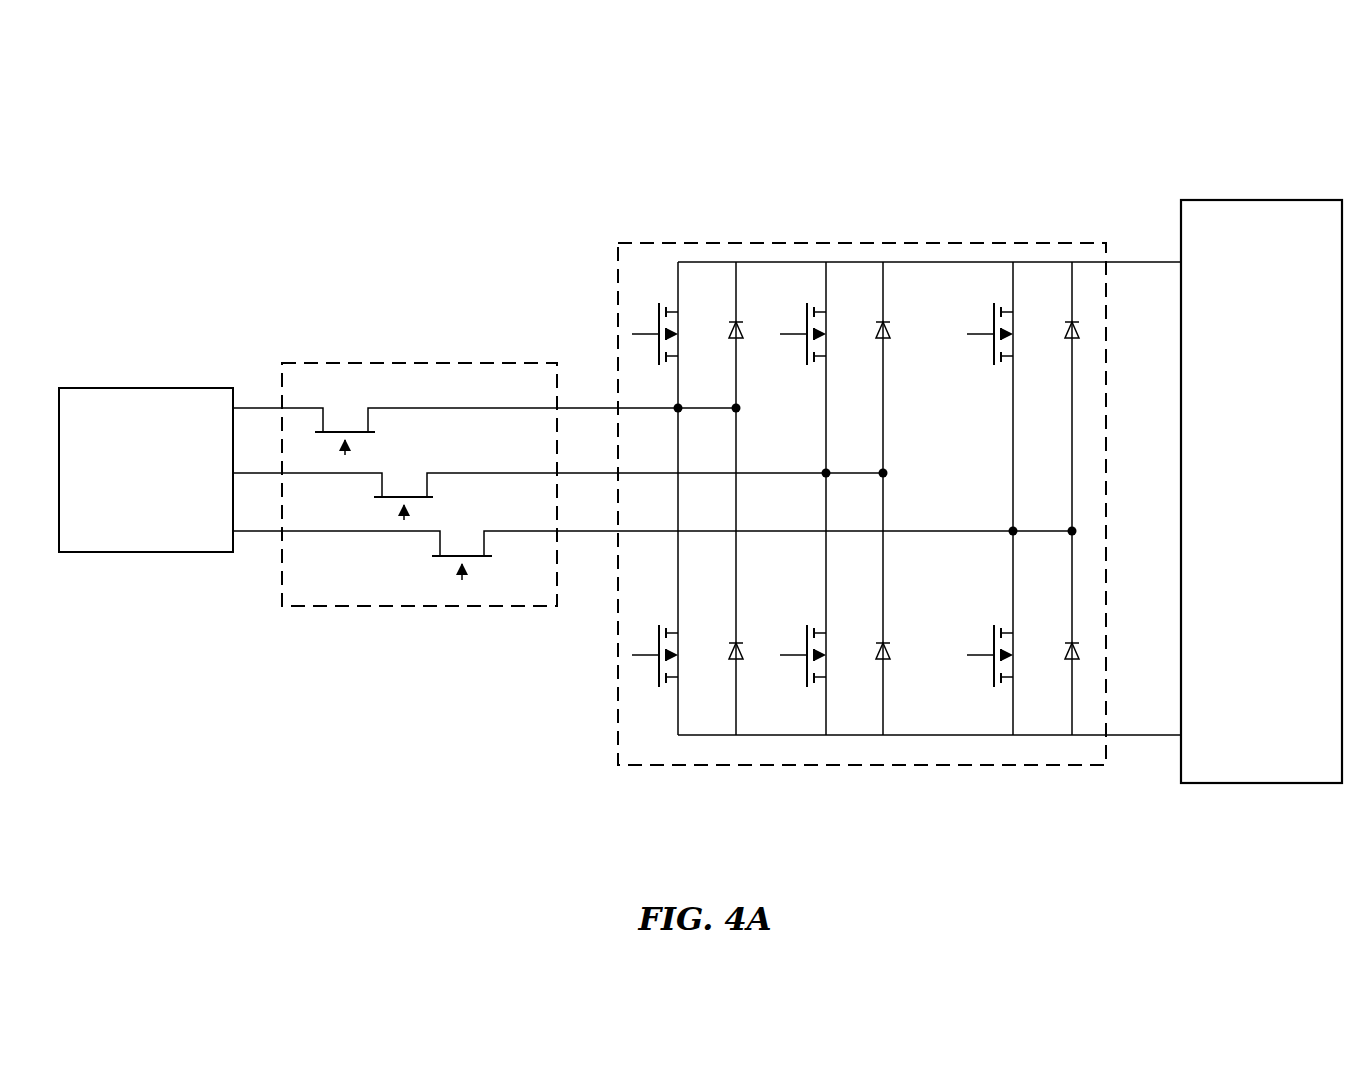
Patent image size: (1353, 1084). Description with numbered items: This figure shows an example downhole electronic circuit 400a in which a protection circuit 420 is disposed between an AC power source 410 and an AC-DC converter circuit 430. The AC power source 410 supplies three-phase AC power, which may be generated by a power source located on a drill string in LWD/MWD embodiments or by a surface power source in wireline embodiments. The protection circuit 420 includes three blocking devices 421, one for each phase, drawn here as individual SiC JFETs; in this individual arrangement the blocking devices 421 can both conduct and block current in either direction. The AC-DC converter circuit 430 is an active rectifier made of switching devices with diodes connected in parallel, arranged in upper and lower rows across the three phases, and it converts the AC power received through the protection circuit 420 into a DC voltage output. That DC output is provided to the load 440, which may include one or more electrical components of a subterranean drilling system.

The downhole electronic circuit 400a is at (1240, 104).
The AC power source 410 is at (146, 470).
The protection circuit 420 is at (320, 347).
The blocking devices 421 is at (386, 427).
The AC-DC converter circuit 430 is at (1026, 229).
The load 440 is at (1261, 491).